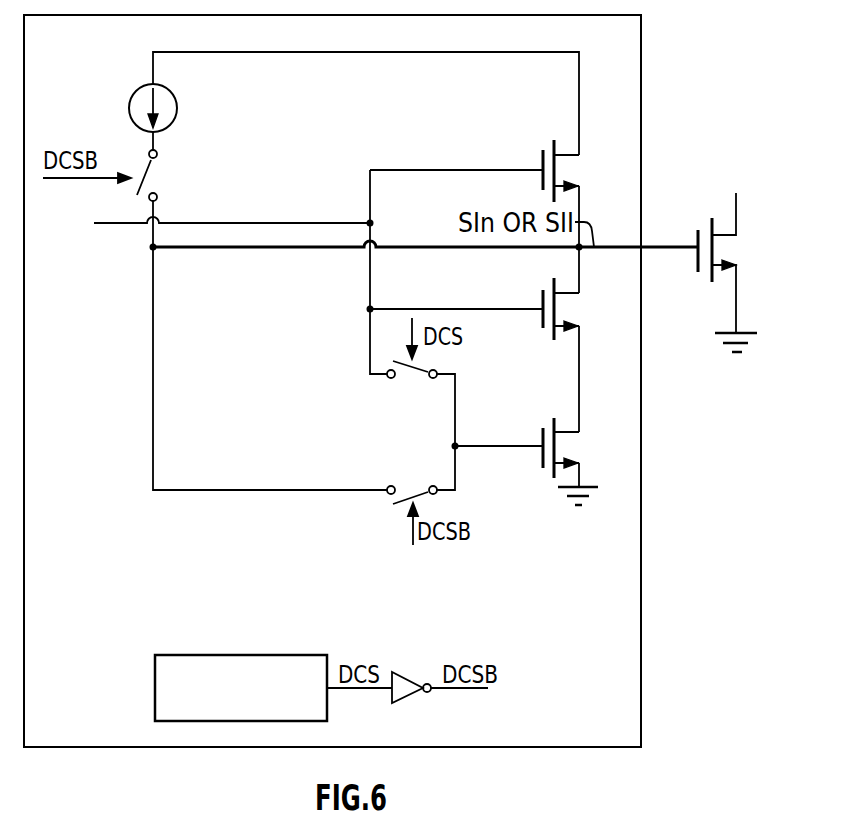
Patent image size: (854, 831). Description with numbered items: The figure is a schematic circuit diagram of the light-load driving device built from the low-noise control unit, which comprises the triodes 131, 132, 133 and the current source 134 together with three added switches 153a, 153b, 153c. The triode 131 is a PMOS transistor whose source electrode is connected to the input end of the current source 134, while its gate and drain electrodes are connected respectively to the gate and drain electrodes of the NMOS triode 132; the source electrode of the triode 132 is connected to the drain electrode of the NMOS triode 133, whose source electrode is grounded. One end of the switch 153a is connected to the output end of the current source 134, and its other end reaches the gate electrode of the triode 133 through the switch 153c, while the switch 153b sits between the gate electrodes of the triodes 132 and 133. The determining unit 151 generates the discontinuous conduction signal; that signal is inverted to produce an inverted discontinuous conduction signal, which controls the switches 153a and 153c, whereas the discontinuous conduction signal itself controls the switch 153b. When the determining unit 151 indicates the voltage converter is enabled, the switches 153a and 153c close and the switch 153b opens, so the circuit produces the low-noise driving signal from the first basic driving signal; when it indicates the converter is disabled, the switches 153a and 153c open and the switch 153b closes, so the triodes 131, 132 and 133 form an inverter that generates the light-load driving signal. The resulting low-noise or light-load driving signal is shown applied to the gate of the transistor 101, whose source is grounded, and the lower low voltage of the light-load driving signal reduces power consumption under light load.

The driving transistor 101 is at (742, 272).
The triode 131 is at (586, 171).
The triode 132 is at (586, 309).
The triode 133 is at (586, 448).
The current source 134 is at (129, 108).
The determining unit 151 is at (289, 714).
The switch 153a is at (180, 175).
The switch 153b is at (410, 388).
The switch 153c is at (410, 478).